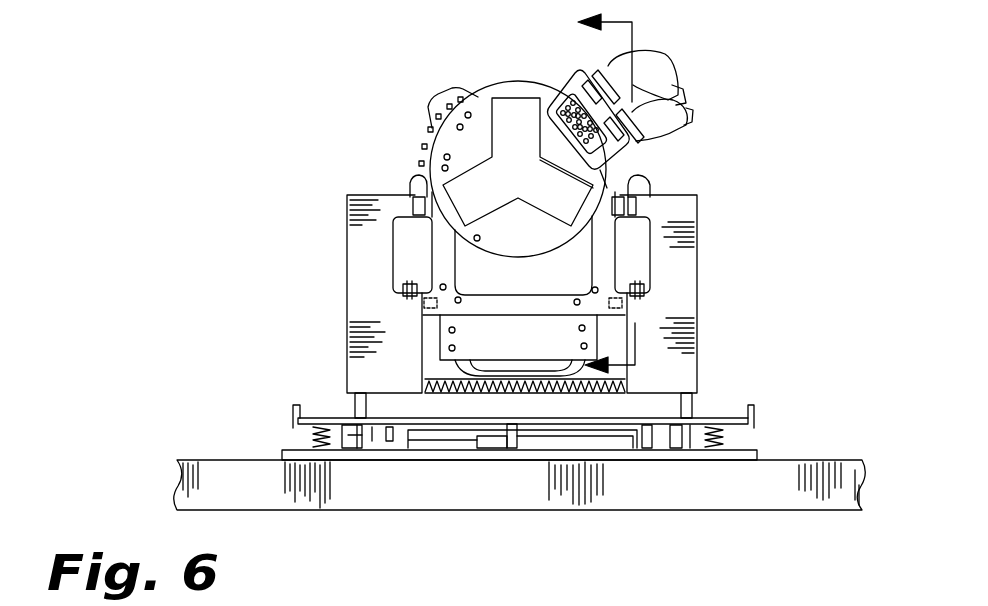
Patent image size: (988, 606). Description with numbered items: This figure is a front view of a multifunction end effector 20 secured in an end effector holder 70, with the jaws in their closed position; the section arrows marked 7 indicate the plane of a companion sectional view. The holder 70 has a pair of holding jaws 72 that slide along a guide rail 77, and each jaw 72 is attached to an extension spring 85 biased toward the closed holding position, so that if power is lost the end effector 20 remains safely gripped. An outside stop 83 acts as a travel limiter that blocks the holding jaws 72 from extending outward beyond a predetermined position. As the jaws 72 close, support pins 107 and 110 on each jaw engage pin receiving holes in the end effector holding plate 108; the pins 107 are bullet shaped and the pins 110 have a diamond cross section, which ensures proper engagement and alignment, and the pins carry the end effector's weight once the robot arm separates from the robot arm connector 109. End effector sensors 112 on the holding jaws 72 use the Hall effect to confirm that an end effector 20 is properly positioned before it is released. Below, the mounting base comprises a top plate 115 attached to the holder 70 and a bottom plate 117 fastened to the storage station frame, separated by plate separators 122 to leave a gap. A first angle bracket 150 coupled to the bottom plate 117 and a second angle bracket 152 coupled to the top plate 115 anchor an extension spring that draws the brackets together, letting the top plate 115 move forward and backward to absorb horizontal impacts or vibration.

The section line 7- 7 is at (620, 195).
The end effector 20 is at (480, 73).
The end effector holder 70 is at (328, 186).
The holding jaws 72 is at (350, 222).
The guide rail 77 is at (688, 410).
The outside stop 83 is at (754, 413).
The extension spring 85 is at (425, 380).
The support pins 107 is at (424, 190).
The end effector holding plate 108 is at (437, 242).
The robot arm connector 109 is at (516, 126).
The support pins 110 is at (425, 312).
The end effector sensors 112 is at (403, 288).
The top plate 115 is at (333, 417).
The bottom plate 117 is at (282, 458).
The plate separators 122 is at (313, 434).
The first angle bracket 150 is at (365, 425).
The second angle bracket 152 is at (350, 448).